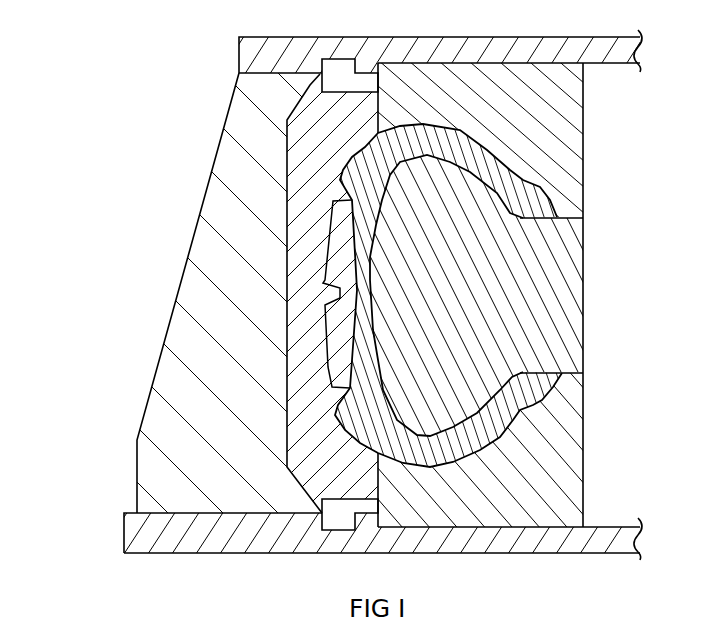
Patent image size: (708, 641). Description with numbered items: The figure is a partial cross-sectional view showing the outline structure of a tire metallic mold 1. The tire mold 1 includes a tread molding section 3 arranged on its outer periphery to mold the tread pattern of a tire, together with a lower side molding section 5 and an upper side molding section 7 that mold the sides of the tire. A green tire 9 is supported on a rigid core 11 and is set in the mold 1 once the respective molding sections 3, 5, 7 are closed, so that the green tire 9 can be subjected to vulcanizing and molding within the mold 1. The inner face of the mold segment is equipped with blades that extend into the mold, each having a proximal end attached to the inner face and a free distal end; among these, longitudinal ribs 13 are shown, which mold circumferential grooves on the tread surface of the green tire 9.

The tire metallic mold 1 is at (166, 134).
The tread molding section 3 is at (296, 393).
The lower side molding section 5 is at (532, 470).
The upper side molding section 7 is at (562, 118).
The green tire 9 is at (530, 200).
The rigid core 11 is at (540, 283).
The longitudinal ribs 13 is at (300, 290).